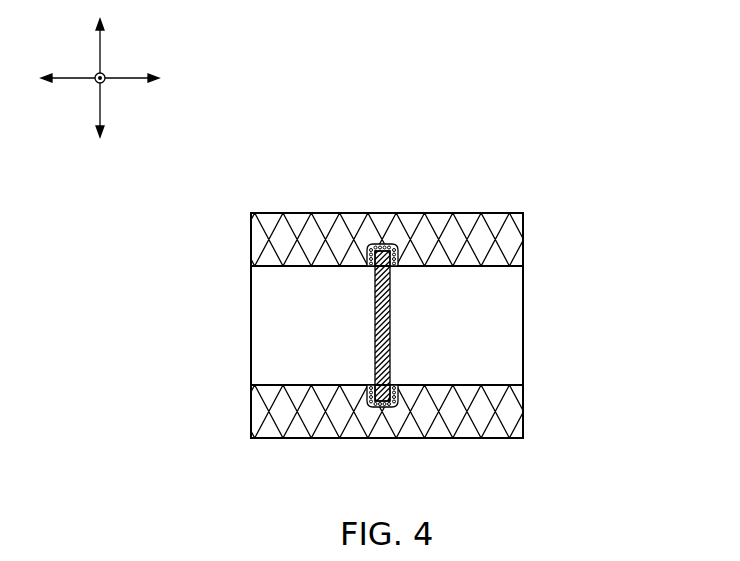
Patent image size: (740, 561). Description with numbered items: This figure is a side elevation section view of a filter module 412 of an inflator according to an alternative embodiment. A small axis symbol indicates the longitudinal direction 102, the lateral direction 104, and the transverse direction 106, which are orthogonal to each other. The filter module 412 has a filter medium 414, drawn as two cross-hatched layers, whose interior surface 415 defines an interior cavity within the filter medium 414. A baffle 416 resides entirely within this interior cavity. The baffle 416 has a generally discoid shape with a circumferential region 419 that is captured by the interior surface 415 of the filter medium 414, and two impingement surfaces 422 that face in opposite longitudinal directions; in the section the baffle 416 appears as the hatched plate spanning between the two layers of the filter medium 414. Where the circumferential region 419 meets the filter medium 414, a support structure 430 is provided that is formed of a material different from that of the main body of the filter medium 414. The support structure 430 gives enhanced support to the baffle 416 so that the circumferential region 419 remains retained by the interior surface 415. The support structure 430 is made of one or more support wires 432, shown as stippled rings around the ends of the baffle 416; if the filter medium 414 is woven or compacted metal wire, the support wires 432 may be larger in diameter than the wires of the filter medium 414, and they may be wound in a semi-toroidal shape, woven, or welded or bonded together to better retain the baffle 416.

The longitudinal direction 102 is at (138, 74).
The lateral direction 104 is at (105, 84).
The transverse direction 106 is at (104, 60).
The filter module 412 is at (528, 151).
The filter medium 414 is at (291, 206).
The interior surface 415 is at (440, 384).
The baffle 416 is at (397, 327).
The circumferential region 419 is at (385, 408).
The impingement surfaces 422 is at (391, 289).
The support structure 430 is at (391, 243).
The support wires 432 is at (374, 252).